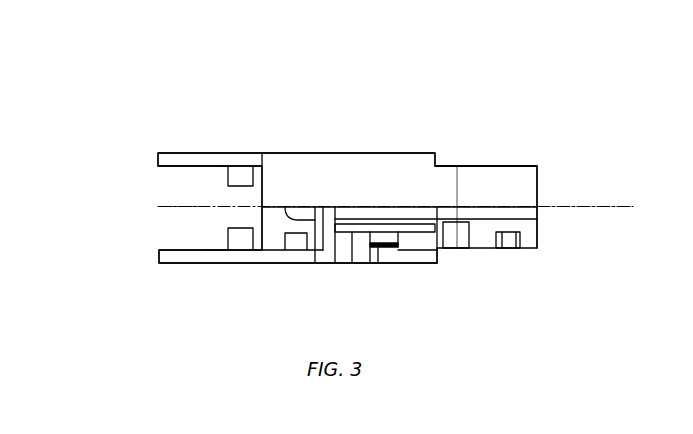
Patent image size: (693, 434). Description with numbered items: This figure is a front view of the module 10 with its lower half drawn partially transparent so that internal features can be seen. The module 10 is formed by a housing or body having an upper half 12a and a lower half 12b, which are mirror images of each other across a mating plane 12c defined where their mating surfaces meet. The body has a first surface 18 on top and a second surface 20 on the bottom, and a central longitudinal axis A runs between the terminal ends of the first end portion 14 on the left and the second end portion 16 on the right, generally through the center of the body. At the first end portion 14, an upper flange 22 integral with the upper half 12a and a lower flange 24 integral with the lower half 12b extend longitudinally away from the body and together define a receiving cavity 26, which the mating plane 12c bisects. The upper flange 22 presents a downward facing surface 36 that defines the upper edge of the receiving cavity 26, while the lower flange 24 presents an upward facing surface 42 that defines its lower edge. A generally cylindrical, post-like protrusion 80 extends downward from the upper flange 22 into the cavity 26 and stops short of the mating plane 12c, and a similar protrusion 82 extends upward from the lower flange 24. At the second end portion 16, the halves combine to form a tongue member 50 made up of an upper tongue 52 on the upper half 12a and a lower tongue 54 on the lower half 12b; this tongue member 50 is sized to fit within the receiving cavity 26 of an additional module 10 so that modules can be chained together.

The module 10 is at (492, 91).
The upper half 12a is at (322, 153).
The lower half 12b is at (323, 265).
The mating plane 12c is at (510, 208).
The first end portion 14 is at (147, 205).
The second end portion 16 is at (563, 197).
The first surface 18 is at (283, 153).
The second surface 20 is at (372, 265).
The upper flange 22 is at (182, 152).
The lower flange 24 is at (168, 263).
The receiving cavity 26 is at (187, 183).
The downward facing surface 36 is at (213, 165).
The upward facing surface 42 is at (203, 250).
The tongue member 50 is at (503, 249).
The upper tongue 52 is at (497, 166).
The lower tongue 54 is at (480, 250).
The protrusion 80 is at (242, 177).
The protrusion 82 is at (240, 240).
The central longitudinal axis A is at (188, 207).